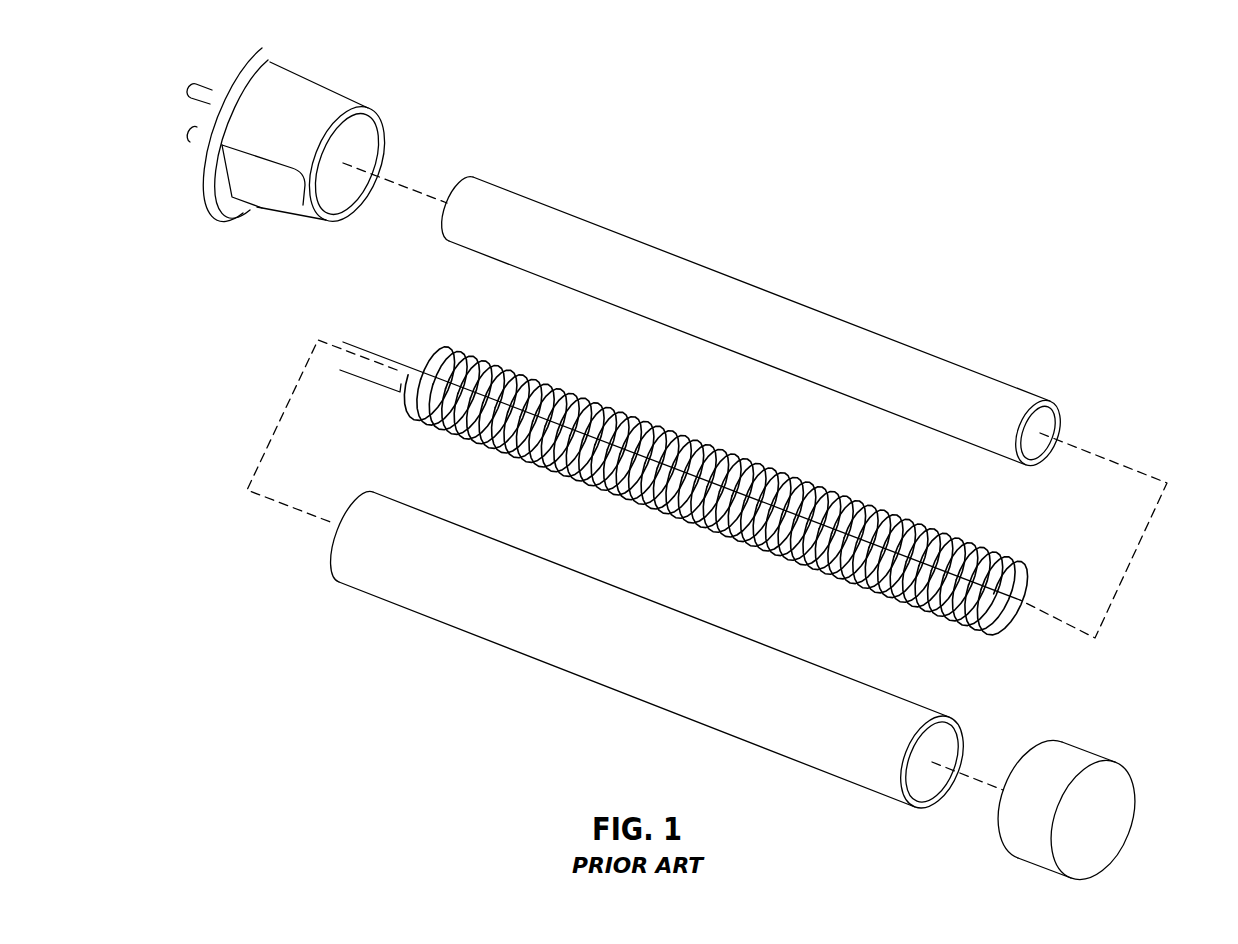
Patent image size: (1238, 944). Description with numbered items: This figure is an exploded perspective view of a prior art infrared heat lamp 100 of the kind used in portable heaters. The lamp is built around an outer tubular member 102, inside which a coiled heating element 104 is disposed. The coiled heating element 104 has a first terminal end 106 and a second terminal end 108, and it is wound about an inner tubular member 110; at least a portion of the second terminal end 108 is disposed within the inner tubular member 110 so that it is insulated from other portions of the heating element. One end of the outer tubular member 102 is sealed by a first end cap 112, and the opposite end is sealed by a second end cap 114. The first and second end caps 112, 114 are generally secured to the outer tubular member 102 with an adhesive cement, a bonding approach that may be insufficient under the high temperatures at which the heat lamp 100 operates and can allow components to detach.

The infrared heat lamp 100 is at (950, 152).
The outer tubular member 102 is at (605, 665).
The coiled heating element 104 is at (781, 445).
The first terminal end 106 is at (368, 378).
The second terminal end 108 is at (362, 343).
The inner tubular member 110 is at (755, 290).
The first end cap 112 is at (303, 103).
The second end cap 114 is at (1102, 780).